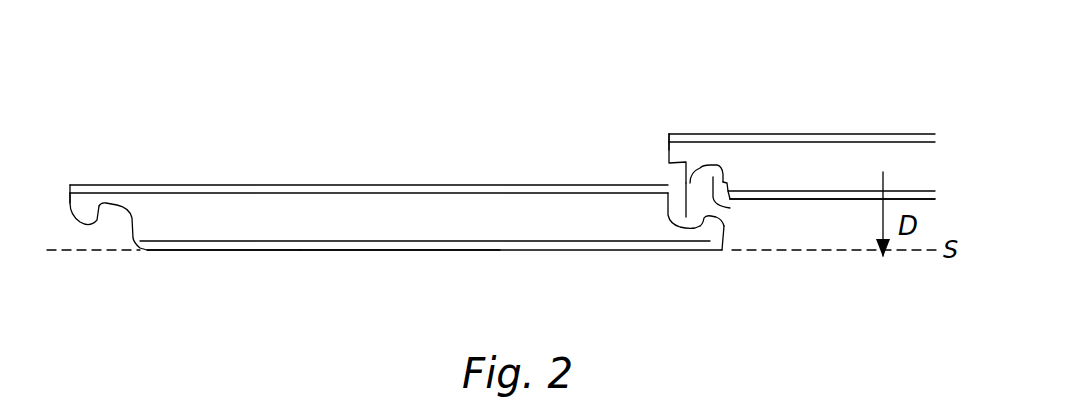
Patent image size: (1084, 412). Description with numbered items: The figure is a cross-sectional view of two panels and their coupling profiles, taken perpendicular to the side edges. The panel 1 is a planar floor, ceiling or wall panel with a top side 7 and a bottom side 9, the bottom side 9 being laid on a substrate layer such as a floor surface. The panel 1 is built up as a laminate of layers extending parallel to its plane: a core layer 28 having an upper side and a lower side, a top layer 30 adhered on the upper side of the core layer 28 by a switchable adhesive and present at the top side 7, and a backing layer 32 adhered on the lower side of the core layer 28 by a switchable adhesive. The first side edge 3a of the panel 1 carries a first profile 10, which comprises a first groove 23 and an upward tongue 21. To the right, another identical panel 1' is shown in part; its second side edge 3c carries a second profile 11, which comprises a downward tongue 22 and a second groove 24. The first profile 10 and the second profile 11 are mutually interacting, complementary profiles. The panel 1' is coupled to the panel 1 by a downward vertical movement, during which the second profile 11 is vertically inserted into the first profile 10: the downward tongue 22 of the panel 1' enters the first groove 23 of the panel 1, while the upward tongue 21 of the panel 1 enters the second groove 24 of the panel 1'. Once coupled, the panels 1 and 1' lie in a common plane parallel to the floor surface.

The panel 1 is at (410, 166).
The identical panel 1' is at (815, 118).
The first side edge 3a is at (673, 258).
The second side edge 3c is at (98, 258).
The top side 7 is at (433, 177).
The bottom side 9 is at (390, 258).
The first profile 10 is at (708, 238).
The second profile 11 is at (91, 198).
The upward tongue 21 is at (715, 227).
The downward tongue 22 is at (692, 182).
The first groove 23 is at (687, 187).
The second groove 24 is at (730, 208).
The core layer 28 is at (268, 210).
The top layer 30 is at (358, 185).
The backing layer 32 is at (257, 248).